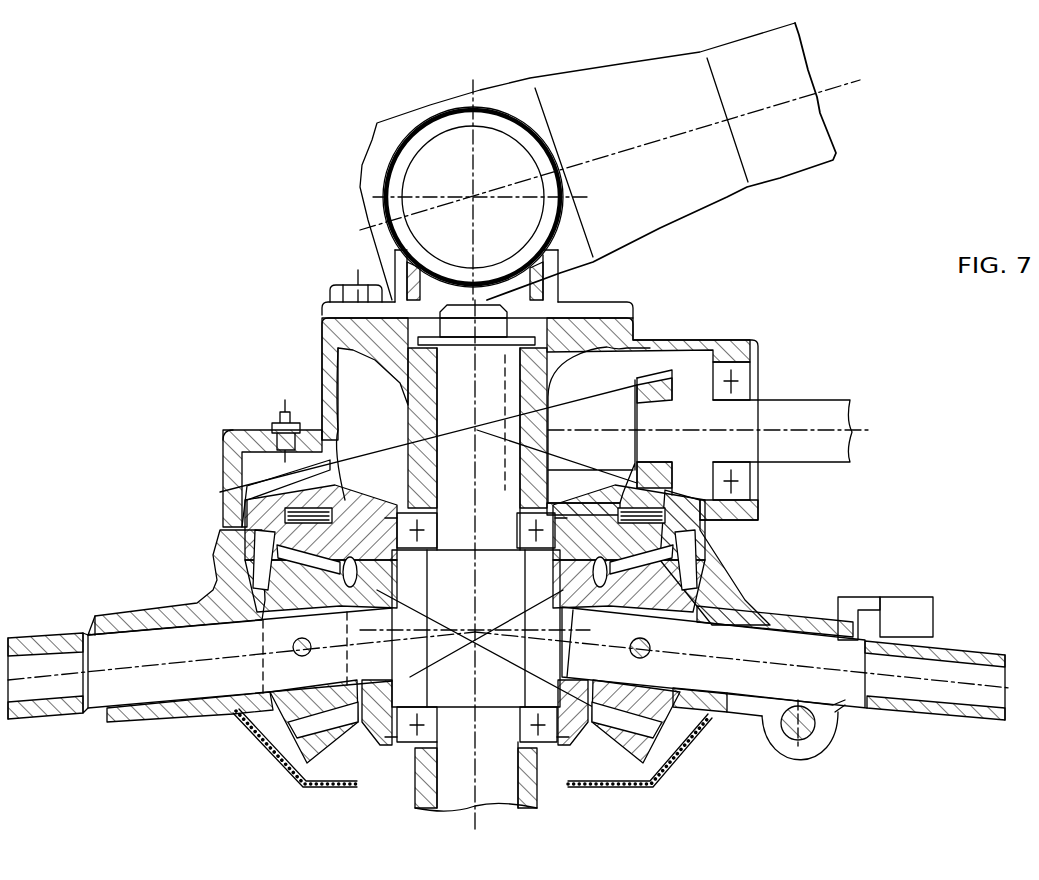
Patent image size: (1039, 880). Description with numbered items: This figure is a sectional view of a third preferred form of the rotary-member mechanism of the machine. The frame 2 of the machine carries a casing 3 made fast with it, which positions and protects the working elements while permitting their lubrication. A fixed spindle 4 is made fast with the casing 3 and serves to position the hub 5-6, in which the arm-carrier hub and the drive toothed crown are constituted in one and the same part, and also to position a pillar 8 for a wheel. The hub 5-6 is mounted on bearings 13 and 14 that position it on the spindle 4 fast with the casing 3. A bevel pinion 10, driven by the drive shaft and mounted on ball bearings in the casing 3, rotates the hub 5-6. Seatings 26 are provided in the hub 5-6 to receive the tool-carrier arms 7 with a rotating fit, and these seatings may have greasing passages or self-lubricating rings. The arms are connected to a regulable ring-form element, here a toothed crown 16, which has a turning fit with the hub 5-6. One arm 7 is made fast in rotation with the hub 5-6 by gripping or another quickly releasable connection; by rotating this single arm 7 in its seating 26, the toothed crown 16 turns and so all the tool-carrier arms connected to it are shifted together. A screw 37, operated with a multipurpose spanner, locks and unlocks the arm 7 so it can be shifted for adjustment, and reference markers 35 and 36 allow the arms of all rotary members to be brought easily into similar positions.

The frame 2 is at (386, 142).
The casing 3 is at (322, 350).
The fixed spindle 4 is at (455, 398).
The bearing 13 is at (403, 515).
The bearing 14 is at (408, 735).
The pillar 8 is at (530, 800).
The hub 5-6 is at (232, 547).
The tool-carrier arm 7 is at (992, 728).
The seating 26 is at (727, 702).
The screw 37 is at (800, 737).
The reference marker 35 is at (838, 607).
The reference marker 36 is at (888, 607).
The toothed crown 16 is at (672, 538).
The bevel pinion 10 is at (760, 412).